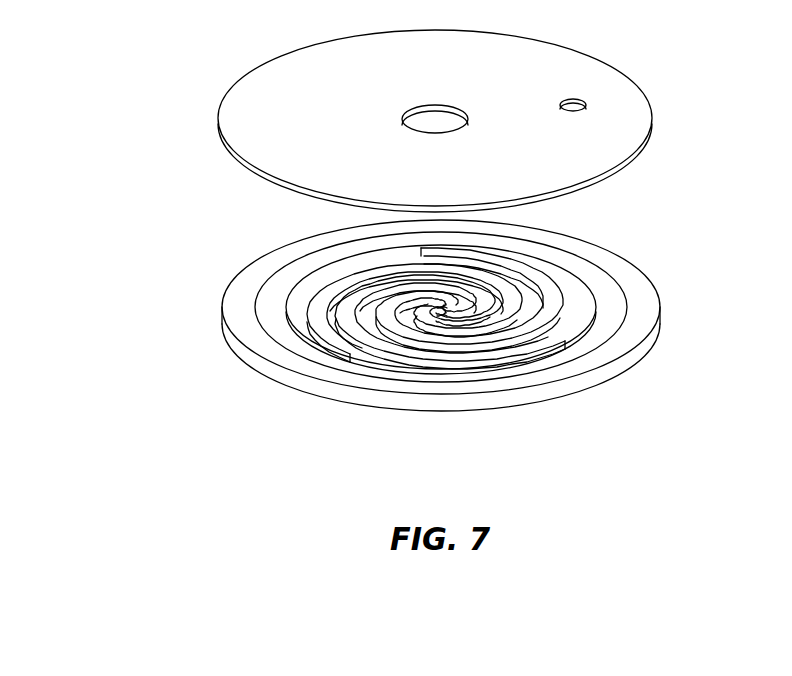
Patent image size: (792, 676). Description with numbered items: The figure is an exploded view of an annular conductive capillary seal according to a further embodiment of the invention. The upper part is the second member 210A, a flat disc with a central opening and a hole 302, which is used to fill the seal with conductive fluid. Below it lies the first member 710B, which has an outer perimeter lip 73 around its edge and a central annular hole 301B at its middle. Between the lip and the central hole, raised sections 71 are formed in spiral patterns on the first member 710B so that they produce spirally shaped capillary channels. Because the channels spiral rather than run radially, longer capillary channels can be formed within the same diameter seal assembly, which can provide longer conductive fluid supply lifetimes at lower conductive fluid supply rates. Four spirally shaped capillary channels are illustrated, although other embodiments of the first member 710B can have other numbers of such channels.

The second member 210A is at (265, 110).
The hole 302 is at (587, 103).
The first member 710B is at (232, 233).
The outer perimeter lip 73 is at (637, 295).
The raised sections 71 is at (573, 353).
The central annular hole 301B is at (440, 310).